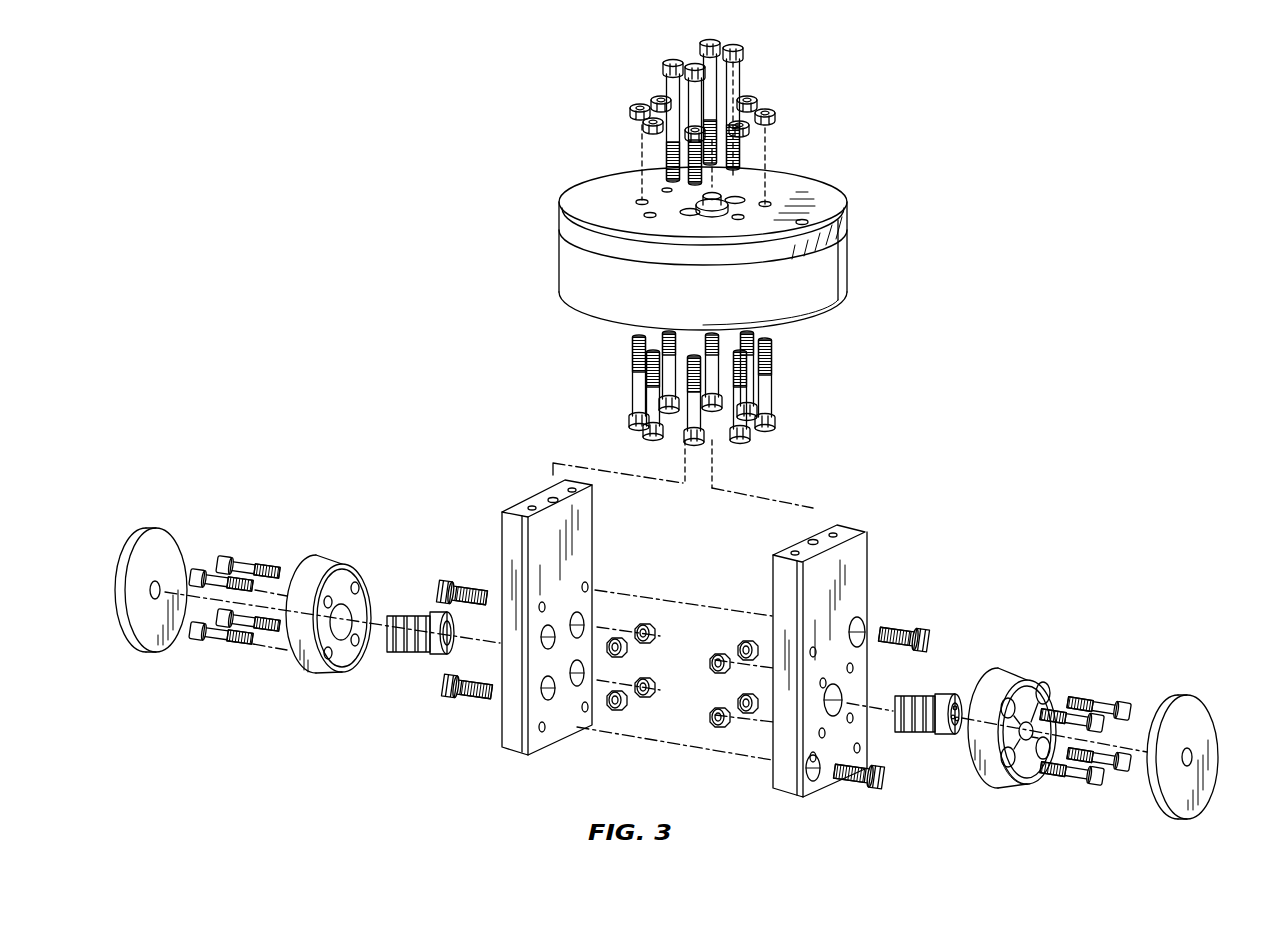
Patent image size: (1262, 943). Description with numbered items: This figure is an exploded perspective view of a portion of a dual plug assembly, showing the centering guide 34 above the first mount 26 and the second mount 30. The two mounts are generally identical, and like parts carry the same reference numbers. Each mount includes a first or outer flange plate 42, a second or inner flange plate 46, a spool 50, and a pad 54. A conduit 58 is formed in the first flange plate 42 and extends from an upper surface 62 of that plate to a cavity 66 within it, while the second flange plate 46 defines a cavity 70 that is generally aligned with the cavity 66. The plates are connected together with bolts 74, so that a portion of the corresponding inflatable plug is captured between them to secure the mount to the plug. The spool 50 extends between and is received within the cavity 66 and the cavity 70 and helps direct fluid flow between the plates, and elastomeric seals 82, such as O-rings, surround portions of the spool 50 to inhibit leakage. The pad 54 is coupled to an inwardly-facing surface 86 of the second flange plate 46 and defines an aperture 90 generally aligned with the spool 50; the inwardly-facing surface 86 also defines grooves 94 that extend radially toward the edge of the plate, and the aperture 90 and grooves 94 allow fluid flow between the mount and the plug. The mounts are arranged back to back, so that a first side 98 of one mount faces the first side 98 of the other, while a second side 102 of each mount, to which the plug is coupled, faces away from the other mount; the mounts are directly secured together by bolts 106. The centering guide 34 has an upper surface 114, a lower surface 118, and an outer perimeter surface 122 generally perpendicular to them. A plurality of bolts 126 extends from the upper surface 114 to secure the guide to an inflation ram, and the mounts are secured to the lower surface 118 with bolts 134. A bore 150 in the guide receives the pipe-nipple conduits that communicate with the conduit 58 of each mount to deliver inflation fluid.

The first mount 26 is at (378, 466).
The second mount 30 is at (1054, 524).
The centering guide 34 is at (695, 248).
The first flange plate 42 is at (503, 530).
The second flange plate 46 is at (670, 692).
The spool 50 is at (669, 679).
The pad 54 is at (671, 651).
The conduit 58 is at (551, 497).
The upper surface 62 is at (678, 620).
The cavity 66 is at (842, 694).
The cavity 70 is at (348, 612).
The bolts 74 is at (198, 572).
The elastomeric seals 82 is at (414, 616).
The inwardly-facing surface 86 is at (1033, 778).
The aperture 90 is at (160, 584).
The grooves 94 is at (1050, 692).
The first side 98 is at (600, 545).
The second side 102 is at (418, 515).
The bolts 106 is at (445, 584).
The upper surface 114 is at (598, 190).
The lower surface 118 is at (806, 318).
The outer perimeter surface 122 is at (565, 260).
The bolts 126 is at (648, 396).
The bolts 134 is at (692, 72).
The bore 150 is at (714, 226).